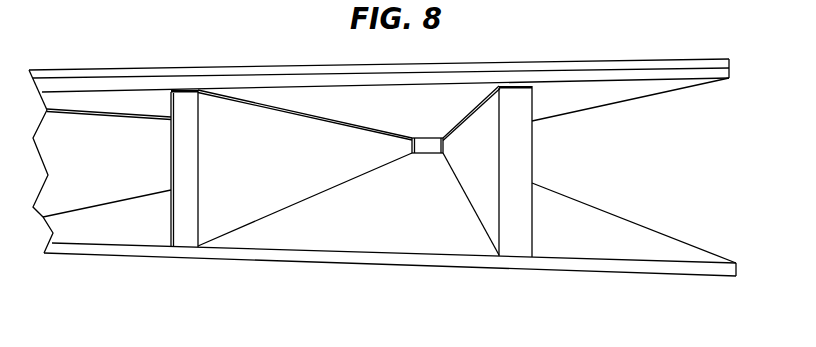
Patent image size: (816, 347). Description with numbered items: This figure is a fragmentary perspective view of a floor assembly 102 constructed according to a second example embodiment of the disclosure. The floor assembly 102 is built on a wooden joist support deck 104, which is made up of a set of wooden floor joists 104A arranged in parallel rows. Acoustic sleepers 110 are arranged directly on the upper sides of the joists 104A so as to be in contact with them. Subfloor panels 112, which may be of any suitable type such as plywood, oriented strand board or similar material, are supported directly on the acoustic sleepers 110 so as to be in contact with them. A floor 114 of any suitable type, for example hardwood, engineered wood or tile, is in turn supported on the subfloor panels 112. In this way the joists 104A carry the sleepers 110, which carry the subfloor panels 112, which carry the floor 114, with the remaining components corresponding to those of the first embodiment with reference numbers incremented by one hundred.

The floor assembly 102 is at (404, 171).
The wooden joist support deck 104 is at (384, 185).
The wooden floor joists 104A is at (186, 180).
The acoustic sleepers 110 is at (192, 88).
The subfloor panels 112 is at (379, 58).
The floor 114 is at (622, 58).